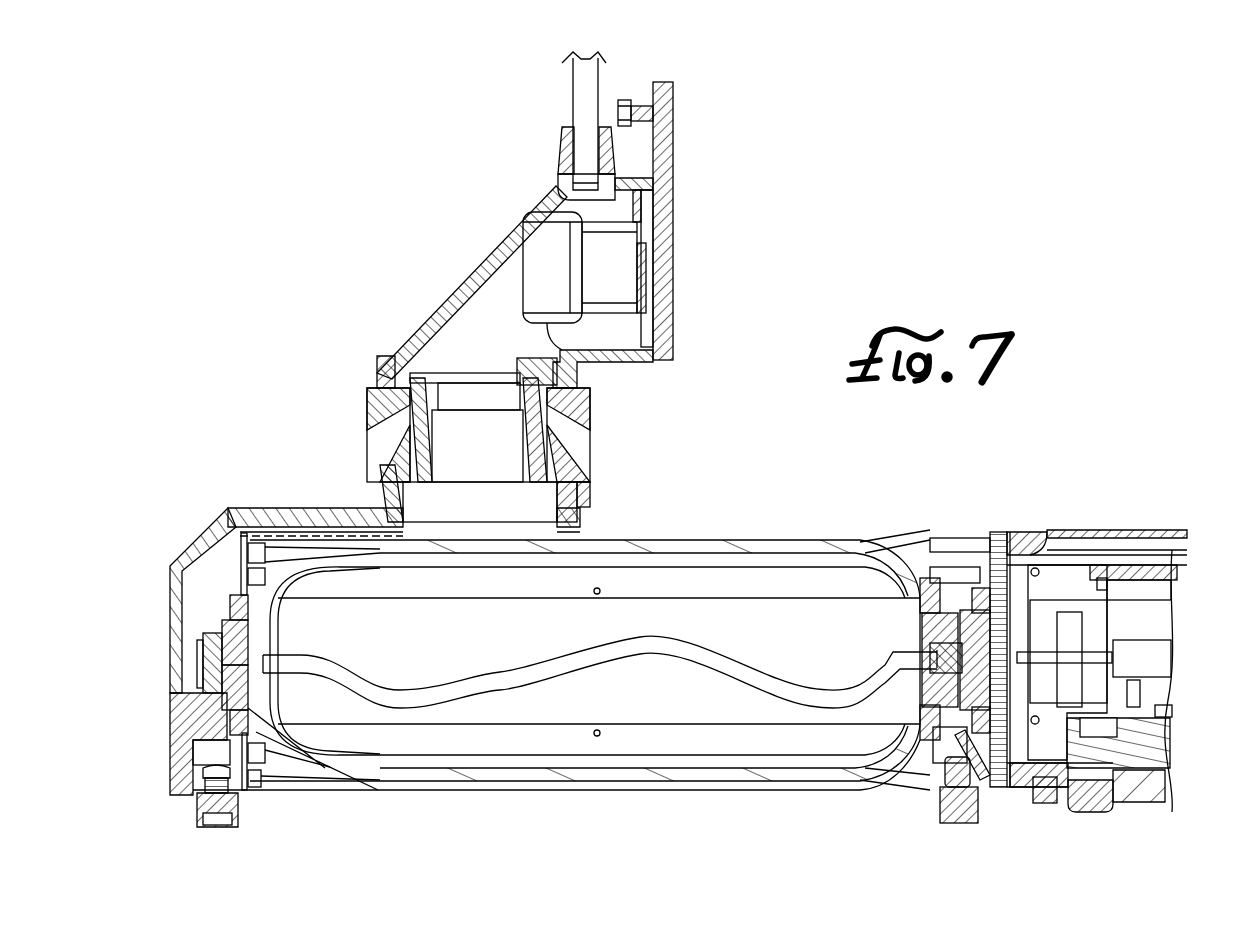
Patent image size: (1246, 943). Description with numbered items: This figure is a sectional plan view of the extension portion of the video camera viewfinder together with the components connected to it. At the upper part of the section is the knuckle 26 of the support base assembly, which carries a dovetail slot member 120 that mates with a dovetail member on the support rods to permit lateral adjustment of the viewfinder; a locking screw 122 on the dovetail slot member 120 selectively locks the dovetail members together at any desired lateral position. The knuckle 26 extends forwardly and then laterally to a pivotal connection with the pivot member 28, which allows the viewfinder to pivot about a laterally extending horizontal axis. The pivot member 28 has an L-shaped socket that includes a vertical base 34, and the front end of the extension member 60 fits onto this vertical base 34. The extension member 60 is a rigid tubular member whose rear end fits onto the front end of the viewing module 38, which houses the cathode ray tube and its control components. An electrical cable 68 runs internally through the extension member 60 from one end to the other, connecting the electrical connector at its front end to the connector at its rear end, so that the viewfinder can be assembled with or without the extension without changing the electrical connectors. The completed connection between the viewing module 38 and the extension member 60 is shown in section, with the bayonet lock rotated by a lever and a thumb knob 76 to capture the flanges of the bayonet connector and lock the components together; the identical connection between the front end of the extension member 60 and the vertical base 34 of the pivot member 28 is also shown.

The knuckle 26 is at (450, 287).
The pivot member 28 is at (259, 508).
The vertical base 34 is at (281, 774).
The viewing module 38 is at (1063, 528).
The extension member 60 is at (738, 548).
The electrical cable 68 is at (396, 690).
The thumb knob 76 is at (978, 819).
The dovetail slot member 120 is at (675, 262).
The locking screw 122 is at (630, 103).